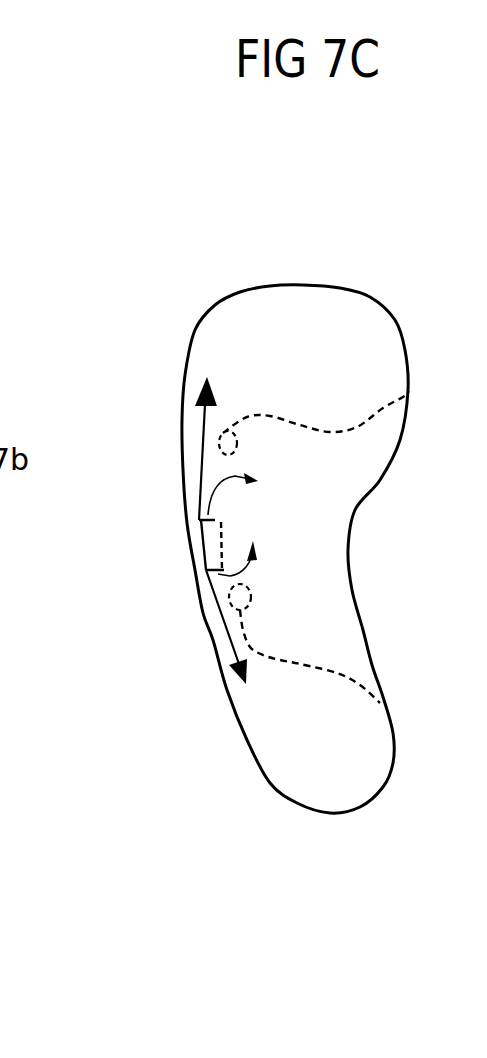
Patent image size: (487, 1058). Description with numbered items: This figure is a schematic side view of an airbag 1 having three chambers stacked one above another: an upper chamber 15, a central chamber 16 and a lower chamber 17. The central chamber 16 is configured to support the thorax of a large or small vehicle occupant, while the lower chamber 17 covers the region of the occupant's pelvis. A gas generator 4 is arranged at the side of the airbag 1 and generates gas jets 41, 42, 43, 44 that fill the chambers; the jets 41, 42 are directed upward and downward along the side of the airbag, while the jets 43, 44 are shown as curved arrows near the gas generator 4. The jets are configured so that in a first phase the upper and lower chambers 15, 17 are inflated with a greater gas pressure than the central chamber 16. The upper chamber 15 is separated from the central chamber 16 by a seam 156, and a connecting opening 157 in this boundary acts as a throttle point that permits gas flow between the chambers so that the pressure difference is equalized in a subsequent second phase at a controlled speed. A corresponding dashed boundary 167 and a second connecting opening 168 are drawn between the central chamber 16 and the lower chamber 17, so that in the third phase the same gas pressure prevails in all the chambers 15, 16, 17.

The airbag 1 is at (226, 769).
The gas generator 4 is at (205, 545).
The upper chamber 15 is at (383, 350).
The central chamber 16 is at (330, 558).
The lower chamber 17 is at (375, 737).
The gas jet 41 is at (203, 433).
The gas jet 42 is at (228, 638).
The gas jet 43 is at (256, 481).
The gas jet 44 is at (250, 568).
The seam 156 is at (300, 425).
The connecting opening 157 is at (190, 453).
The heel boundary line 167 is at (293, 662).
The heel mounting point 168 is at (216, 618).